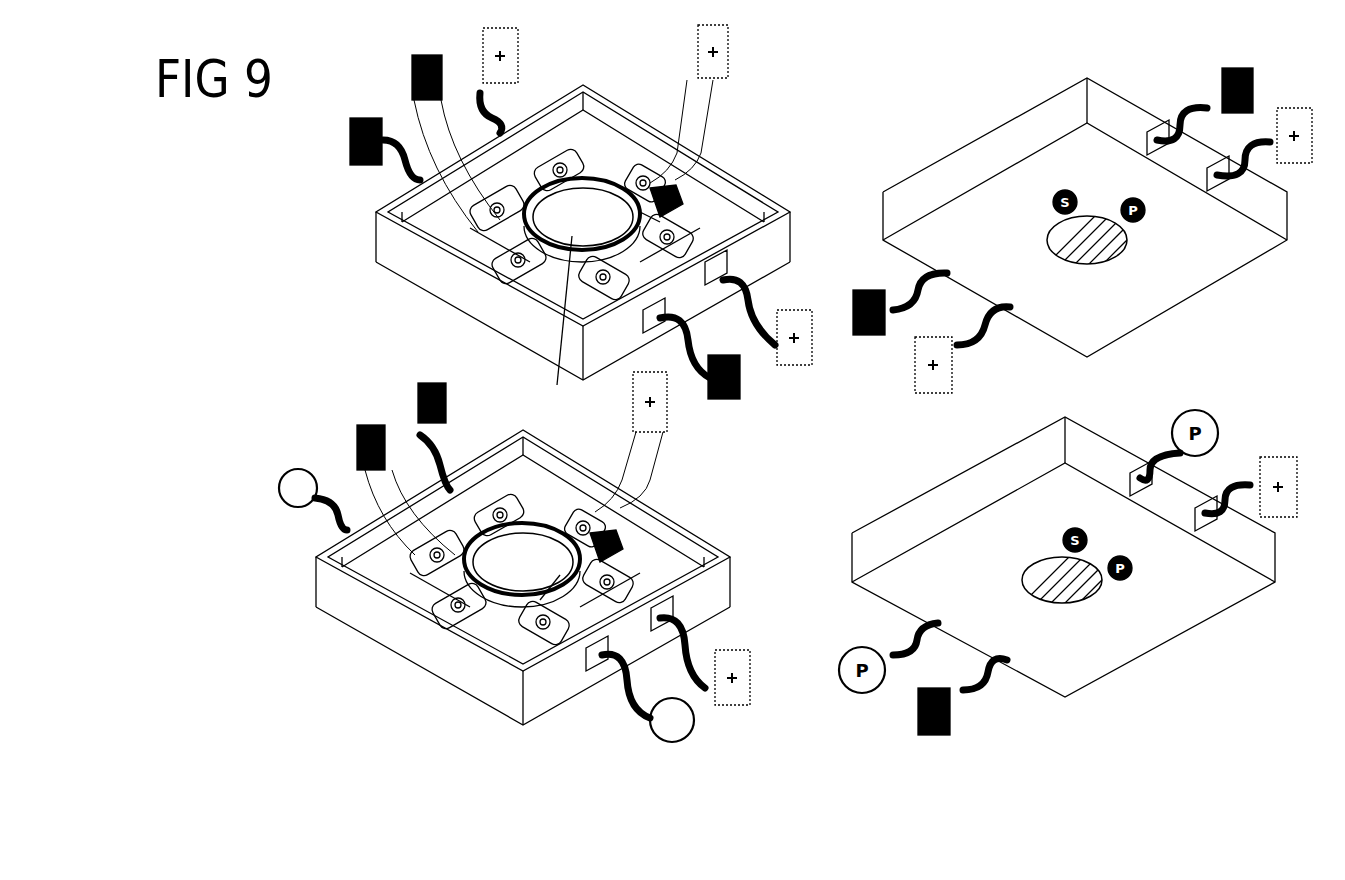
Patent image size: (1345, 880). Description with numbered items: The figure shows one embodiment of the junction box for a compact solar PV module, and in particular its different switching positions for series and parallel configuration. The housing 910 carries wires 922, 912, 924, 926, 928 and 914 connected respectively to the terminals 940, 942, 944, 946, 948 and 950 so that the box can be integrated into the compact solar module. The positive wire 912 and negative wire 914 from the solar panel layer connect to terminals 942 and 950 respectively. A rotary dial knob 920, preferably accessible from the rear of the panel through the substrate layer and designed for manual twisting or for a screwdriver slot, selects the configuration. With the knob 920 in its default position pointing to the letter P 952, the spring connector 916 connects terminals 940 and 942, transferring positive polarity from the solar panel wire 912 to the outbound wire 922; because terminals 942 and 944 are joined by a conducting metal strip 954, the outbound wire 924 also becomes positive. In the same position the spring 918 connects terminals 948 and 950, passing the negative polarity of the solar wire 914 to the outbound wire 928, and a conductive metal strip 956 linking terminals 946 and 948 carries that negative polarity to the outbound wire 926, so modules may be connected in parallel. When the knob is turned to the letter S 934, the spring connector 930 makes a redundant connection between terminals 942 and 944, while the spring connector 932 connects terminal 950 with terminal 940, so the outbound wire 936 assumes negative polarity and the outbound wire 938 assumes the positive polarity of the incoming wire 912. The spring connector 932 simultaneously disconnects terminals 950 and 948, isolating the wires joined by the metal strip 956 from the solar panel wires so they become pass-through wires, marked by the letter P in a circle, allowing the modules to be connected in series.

The housing cover 910 is at (918, 236).
The positive solar panel wire 912 is at (693, 112).
The negative solar panel wire 914 is at (437, 143).
The spring connector 916 is at (585, 180).
The spring 918 is at (530, 250).
The rotary dial knob 920 is at (545, 563).
The outbound wire 922 is at (495, 122).
The outbound wire 924 is at (745, 298).
The outbound wire 926 is at (668, 330).
The outbound wire 928 is at (400, 180).
The spring connector 930 is at (562, 572).
The spring connector 932 is at (583, 550).
The letter S 934 is at (1093, 582).
The outbound wire 936 is at (440, 443).
The outbound wire 938 is at (688, 645).
The terminal 940 is at (562, 162).
The terminal 942 is at (672, 200).
The terminal 944 is at (682, 234).
The terminal 946 is at (600, 285).
The terminal 948 is at (505, 266).
The terminal 950 is at (490, 196).
The letter P 952 is at (1117, 243).
The conducting metal strip 954 is at (652, 214).
The conductive metal strip 956 is at (578, 220).